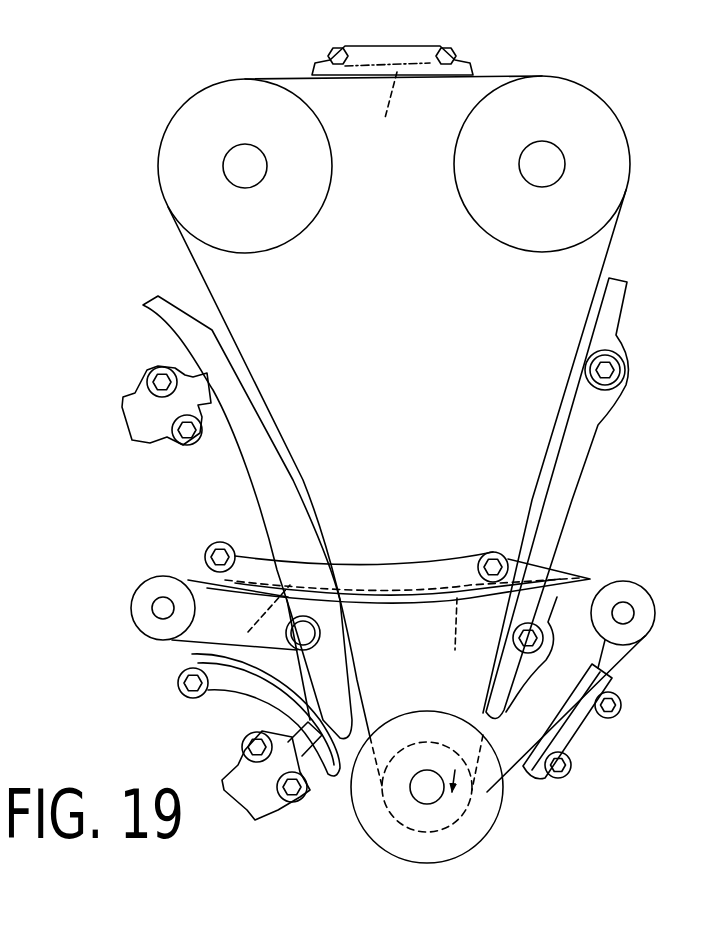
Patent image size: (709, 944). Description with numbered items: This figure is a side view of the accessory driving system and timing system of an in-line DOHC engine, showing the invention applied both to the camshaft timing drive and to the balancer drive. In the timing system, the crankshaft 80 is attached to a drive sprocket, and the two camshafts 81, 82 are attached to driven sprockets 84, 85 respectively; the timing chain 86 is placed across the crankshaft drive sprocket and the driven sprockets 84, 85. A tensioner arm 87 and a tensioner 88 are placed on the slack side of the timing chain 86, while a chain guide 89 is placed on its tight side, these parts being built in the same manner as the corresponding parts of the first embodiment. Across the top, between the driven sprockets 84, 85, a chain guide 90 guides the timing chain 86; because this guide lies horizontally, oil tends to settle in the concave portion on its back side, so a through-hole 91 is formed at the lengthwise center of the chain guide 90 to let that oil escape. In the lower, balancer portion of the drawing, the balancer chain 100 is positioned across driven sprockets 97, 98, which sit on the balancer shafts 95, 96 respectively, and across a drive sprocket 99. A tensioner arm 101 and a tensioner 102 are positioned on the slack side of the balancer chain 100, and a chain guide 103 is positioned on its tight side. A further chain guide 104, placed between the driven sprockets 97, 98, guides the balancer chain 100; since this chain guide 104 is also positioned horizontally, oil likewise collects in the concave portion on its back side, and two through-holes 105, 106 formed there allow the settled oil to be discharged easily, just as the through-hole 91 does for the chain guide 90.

The crankshaft 80 is at (427, 790).
The camshaft 81 is at (548, 158).
The camshaft 82 is at (247, 160).
The driven sprocket 84 is at (612, 170).
The driven sprocket 85 is at (180, 182).
The timing chain 86 is at (615, 245).
The tensioner arm 87 is at (250, 490).
The tensioner 88 is at (150, 437).
The chain guide 89 is at (580, 488).
The chain guide 90 is at (445, 40).
The through-hole 91 is at (384, 107).
The balancer shaft 95 is at (624, 610).
The balancer shaft 96 is at (163, 606).
The driven sprocket 97 is at (641, 628).
The driven sprocket 98 is at (150, 627).
The drive sprocket 99 is at (448, 845).
The balancer chain 100 is at (515, 795).
The tensioner arm 101 is at (248, 710).
The tensioner 102 is at (262, 800).
The chain guide 103 is at (586, 736).
The chain guide 104 is at (396, 556).
The through-hole 105 is at (264, 652).
The through-hole 106 is at (492, 654).